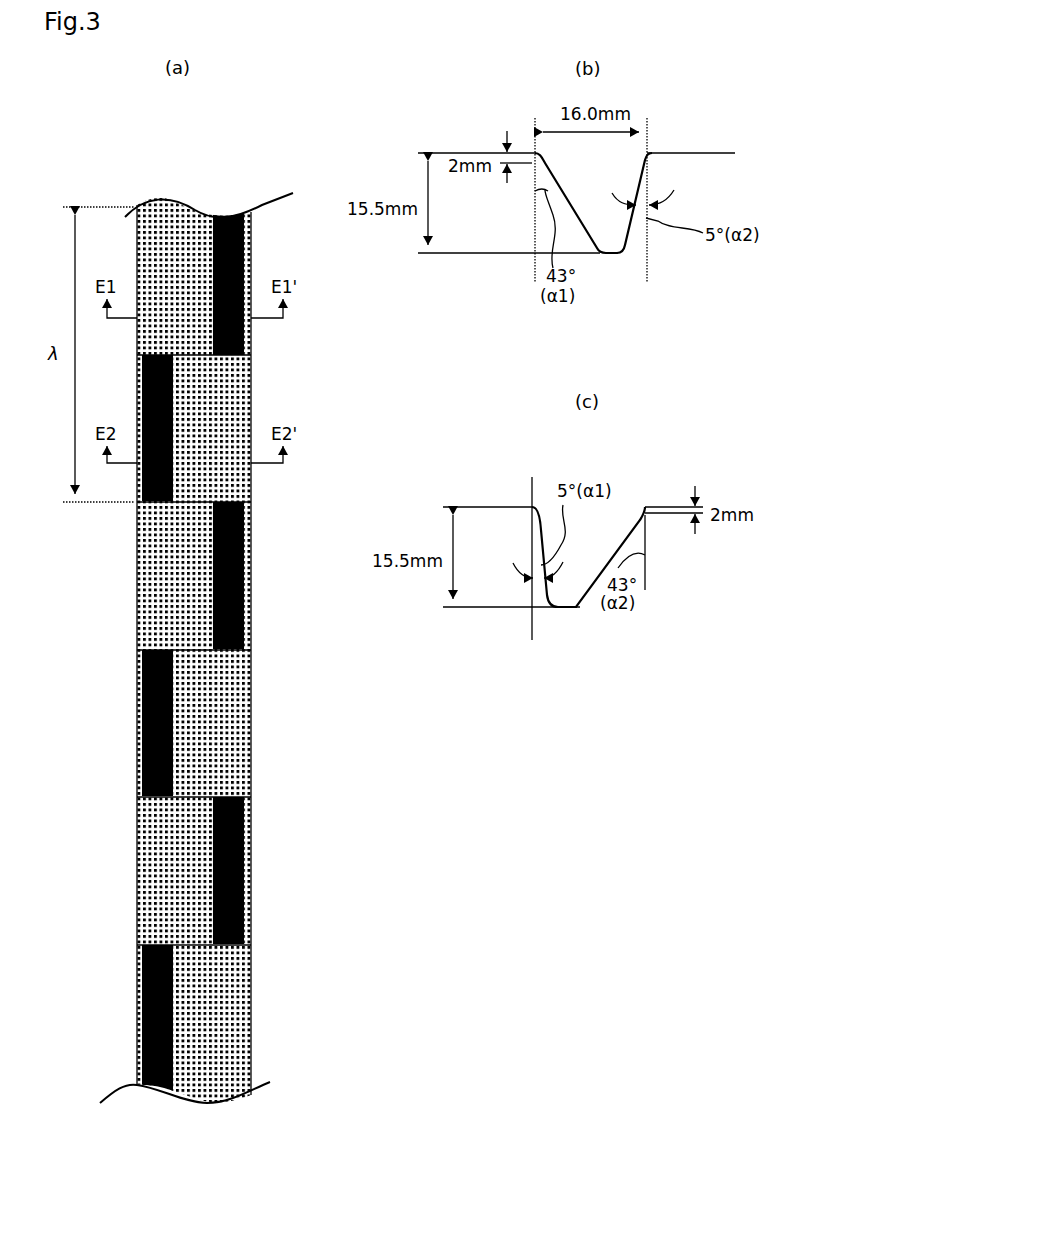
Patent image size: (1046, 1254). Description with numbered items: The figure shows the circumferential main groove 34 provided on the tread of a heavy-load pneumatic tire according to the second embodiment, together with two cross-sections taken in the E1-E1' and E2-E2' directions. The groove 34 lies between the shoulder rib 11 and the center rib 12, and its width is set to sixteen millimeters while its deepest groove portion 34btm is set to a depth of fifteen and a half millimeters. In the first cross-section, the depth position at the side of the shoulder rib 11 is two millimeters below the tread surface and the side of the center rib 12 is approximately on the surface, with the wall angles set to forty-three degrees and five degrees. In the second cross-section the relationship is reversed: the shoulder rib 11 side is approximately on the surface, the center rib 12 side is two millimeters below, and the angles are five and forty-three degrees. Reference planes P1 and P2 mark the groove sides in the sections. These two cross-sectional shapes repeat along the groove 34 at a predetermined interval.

The circumferential main groove 34 is at (181, 184).
The deepest groove portion 34btm is at (243, 322).
The shoulder rib 11 is at (437, 150).
The center rib 12 is at (716, 151).
The first reference plane P1 is at (531, 625).
The second reference plane P2 is at (648, 262).